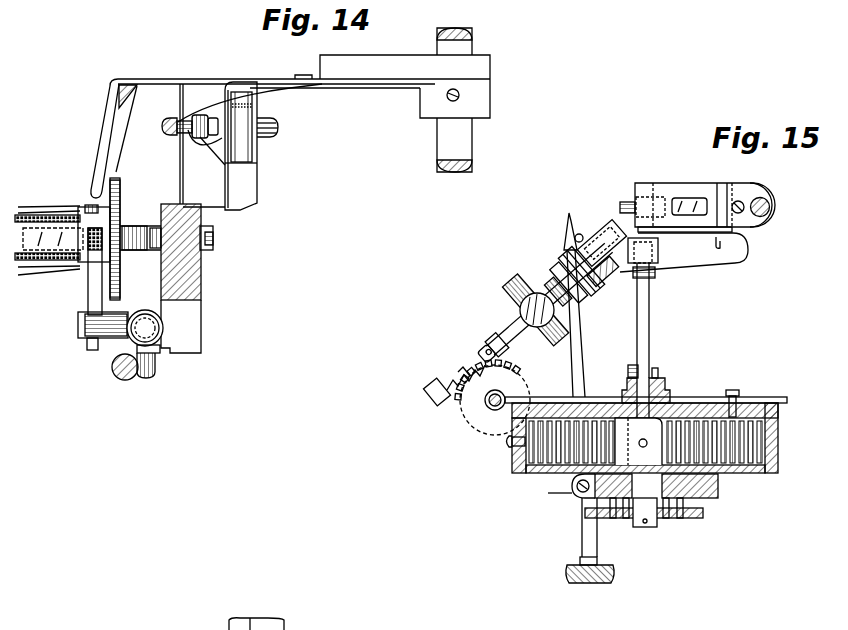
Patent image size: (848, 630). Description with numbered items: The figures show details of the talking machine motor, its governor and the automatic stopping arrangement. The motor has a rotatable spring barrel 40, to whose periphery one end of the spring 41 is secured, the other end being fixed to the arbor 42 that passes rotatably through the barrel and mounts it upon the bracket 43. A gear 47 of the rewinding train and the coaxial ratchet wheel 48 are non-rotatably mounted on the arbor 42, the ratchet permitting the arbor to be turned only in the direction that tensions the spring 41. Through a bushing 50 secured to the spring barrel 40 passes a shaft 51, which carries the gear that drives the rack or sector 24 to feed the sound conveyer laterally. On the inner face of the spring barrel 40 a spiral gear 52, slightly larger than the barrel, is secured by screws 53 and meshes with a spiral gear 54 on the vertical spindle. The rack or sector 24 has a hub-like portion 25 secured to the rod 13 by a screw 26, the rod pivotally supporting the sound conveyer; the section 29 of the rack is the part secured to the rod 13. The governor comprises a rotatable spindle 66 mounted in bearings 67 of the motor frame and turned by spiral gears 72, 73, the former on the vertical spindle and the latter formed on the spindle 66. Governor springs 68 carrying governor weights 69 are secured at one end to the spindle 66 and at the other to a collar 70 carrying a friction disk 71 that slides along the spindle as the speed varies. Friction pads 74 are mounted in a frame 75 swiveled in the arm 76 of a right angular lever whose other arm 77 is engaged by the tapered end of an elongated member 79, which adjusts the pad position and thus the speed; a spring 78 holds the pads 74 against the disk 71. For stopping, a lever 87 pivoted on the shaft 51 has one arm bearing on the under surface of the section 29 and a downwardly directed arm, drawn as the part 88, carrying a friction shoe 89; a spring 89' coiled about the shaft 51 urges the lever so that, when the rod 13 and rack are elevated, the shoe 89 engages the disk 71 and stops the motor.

In FIG. 14, the rod 13 is at (468, 43).
In FIG. 15, the rod 13 is at (770, 203).
In FIG. 15, the rack or sector 24 is at (668, 188).
In FIG. 14, the hub-like portion 25 is at (489, 107).
In FIG. 14, the screw 26 is at (447, 99).
In FIG. 14, the section 29 is at (398, 56).
In FIG. 15, the spring barrel 40 is at (778, 452).
In FIG. 15, the spring 41 is at (516, 462).
In FIG. 15, the arbor 42 is at (647, 527).
In FIG. 15, the bracket 43 is at (720, 492).
In FIG. 15, the gear 47 is at (706, 518).
In FIG. 15, the ratchet wheel 48 is at (698, 501).
In FIG. 15, the bushing 50 is at (665, 383).
In FIG. 14, the shaft 51 is at (264, 138).
In FIG. 15, the shaft 51 is at (645, 330).
In FIG. 15, the spiral gear 52 is at (763, 397).
In FIG. 15, the screws 53 is at (733, 390).
In FIG. 15, the spiral gear 54 is at (492, 411).
In FIG. 14, the governor spindle 66 is at (203, 245).
In FIG. 15, the governor spindle 66 is at (496, 323).
In FIG. 14, the bearings 67 is at (203, 269).
In FIG. 15, the bearings 67 is at (598, 223).
In FIG. 15, the governor springs 68 is at (505, 310).
In FIG. 15, the governor weights 69 is at (537, 293).
In FIG. 14, the collar 70 is at (82, 206).
In FIG. 14, the friction disk 71 is at (120, 195).
In FIG. 15, the spiral gear 72 is at (447, 410).
In FIG. 15, the spiral gear 73 is at (463, 356).
In FIG. 14, the friction pads 74 is at (106, 260).
In FIG. 14, the frame 75 is at (86, 298).
In FIG. 14, the arm 76 is at (112, 348).
In FIG. 14, the arm 77 is at (157, 375).
In FIG. 15, the spring 78 is at (620, 206).
In FIG. 14, the elongated member 79 is at (130, 382).
In FIG. 15, the elongated member 79 is at (763, 186).
In FIG. 14, the lever 87 is at (161, 79).
In FIG. 15, the lever 87 is at (746, 243).
In FIG. 14, the leg 88 is at (104, 134).
In FIG. 14, the friction shoe 89 is at (212, 130).
In FIG. 15, the friction shoe 89 is at (677, 279).
In FIG. 14, the spring 89' is at (194, 156).